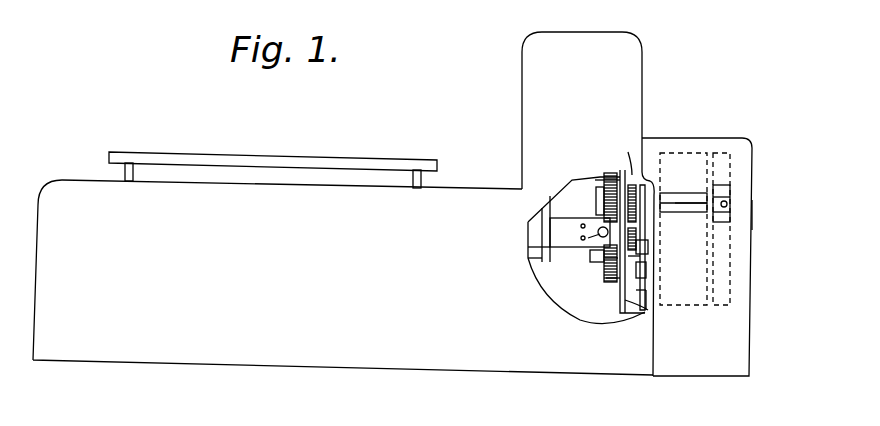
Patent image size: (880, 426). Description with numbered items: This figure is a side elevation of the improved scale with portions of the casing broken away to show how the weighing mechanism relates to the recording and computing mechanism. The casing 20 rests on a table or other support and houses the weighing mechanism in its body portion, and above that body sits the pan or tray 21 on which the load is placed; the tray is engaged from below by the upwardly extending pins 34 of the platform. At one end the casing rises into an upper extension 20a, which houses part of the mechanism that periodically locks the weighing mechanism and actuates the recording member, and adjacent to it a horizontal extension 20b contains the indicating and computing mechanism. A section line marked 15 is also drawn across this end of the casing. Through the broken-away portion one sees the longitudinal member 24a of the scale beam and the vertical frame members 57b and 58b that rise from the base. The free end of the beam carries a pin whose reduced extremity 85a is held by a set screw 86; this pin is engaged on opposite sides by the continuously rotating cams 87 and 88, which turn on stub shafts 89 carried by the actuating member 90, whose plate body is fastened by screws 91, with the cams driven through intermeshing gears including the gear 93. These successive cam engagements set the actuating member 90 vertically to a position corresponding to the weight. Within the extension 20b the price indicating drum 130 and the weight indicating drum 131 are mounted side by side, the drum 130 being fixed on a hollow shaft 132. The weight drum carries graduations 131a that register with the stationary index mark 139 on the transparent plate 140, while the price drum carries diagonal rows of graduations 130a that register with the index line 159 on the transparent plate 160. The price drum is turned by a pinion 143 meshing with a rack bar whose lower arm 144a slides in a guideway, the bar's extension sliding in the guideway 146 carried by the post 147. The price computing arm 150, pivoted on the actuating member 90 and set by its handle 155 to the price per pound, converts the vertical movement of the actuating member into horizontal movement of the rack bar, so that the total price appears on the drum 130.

The casing 20 is at (372, 361).
The upper extension of the casing 20a is at (533, 85).
The horizontal extension of the casing 20b is at (738, 365).
The pan or tray 21 is at (332, 158).
The pins 34 is at (133, 180).
The section line 15 is at (733, 153).
The longitudinal member 24a is at (558, 238).
The vertical frame member 57b is at (618, 318).
The vertical frame member 58b is at (540, 206).
The reduced extremity of the pin 85a is at (603, 247).
The set screw 86 is at (598, 226).
The cam 87 is at (582, 180).
The cam 88 is at (610, 260).
The stub shafts 89 is at (596, 197).
The actuating member 90 is at (622, 153).
The screws 91 is at (610, 277).
The gear 93 is at (602, 178).
The price indicating drum 130 is at (675, 153).
The graduations 130a is at (646, 222).
The weight indicating drum 131 is at (736, 152).
The graduations 131a is at (753, 217).
The hollow shaft 132 is at (641, 186).
The index mark 139 is at (732, 204).
The transparent plate 140 is at (732, 192).
The pinion 143 is at (644, 232).
The lower arm of the rack bar 144a is at (641, 280).
The guideway 146 is at (640, 310).
The post 147 is at (650, 316).
The price computing arm 150 is at (640, 258).
The handle 155 is at (644, 247).
The index line 159 is at (678, 197).
The transparent plate 160 is at (694, 203).